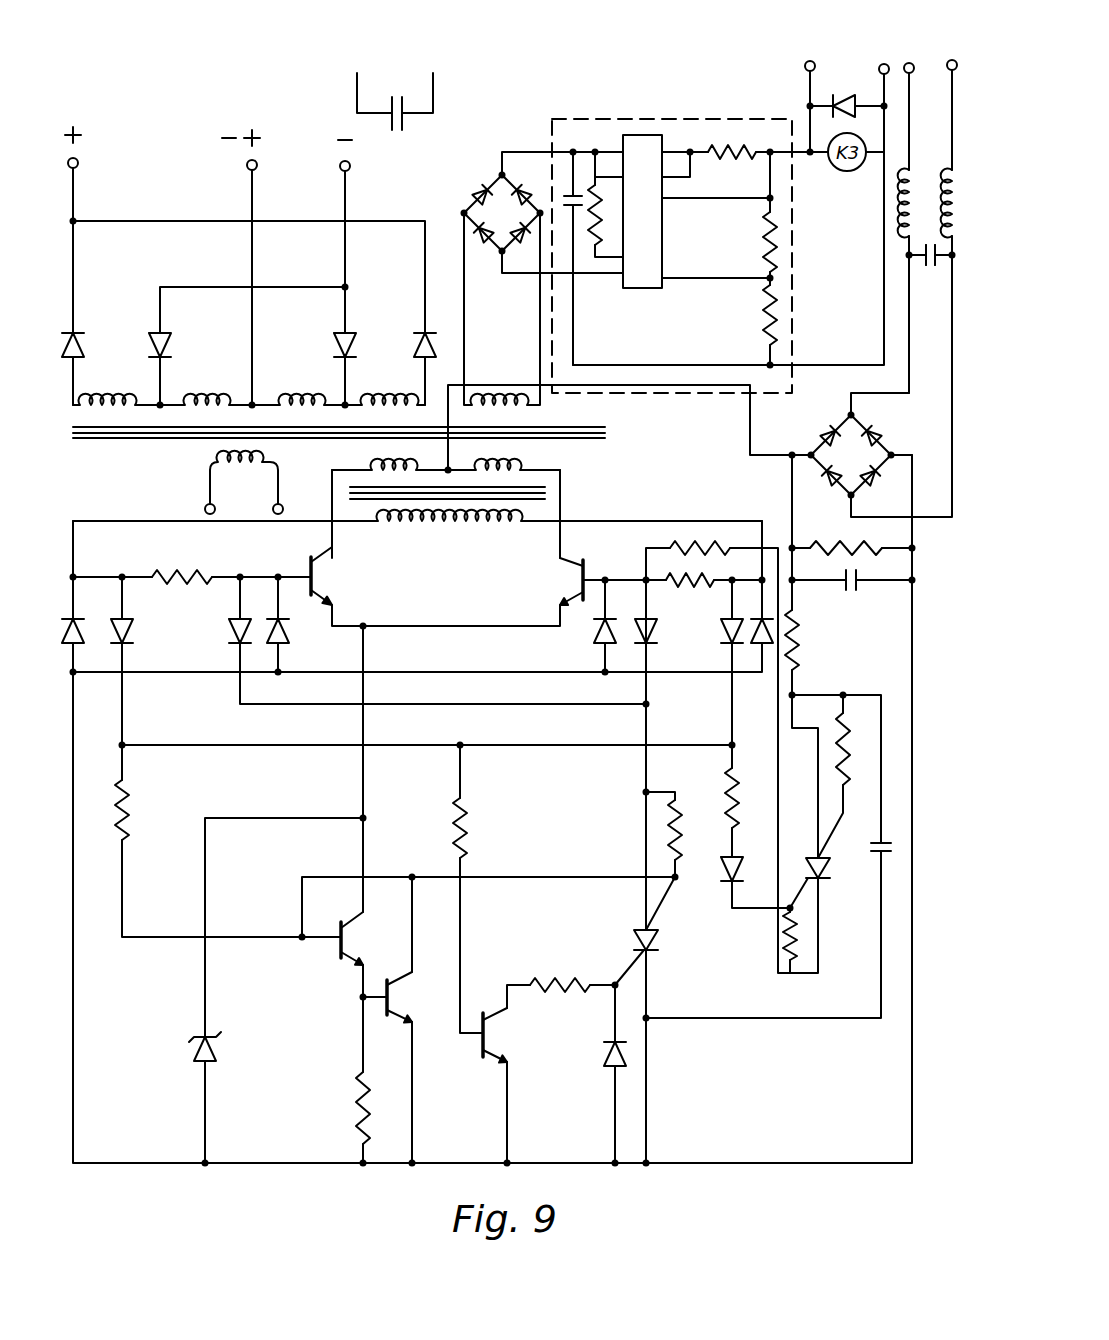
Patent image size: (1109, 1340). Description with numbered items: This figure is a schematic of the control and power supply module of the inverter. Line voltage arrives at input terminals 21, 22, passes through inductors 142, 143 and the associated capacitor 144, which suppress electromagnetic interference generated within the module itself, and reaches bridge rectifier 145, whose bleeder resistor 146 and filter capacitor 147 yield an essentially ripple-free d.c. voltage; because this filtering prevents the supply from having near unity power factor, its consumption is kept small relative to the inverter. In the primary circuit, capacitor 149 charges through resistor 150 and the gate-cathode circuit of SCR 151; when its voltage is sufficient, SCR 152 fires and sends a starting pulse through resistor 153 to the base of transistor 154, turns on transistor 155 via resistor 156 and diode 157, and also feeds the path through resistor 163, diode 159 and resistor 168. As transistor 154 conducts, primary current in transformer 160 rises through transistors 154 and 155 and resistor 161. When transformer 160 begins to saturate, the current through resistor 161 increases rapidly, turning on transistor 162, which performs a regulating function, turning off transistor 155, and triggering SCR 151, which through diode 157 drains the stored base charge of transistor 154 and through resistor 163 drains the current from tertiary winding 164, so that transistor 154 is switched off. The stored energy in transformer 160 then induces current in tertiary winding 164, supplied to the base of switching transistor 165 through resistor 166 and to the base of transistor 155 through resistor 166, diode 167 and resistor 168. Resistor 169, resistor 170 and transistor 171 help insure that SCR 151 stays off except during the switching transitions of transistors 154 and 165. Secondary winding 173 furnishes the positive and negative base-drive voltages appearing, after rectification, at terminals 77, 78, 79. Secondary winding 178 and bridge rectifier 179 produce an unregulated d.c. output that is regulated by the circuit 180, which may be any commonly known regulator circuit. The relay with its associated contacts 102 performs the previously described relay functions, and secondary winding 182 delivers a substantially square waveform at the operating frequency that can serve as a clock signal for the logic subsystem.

The input terminal 21 is at (909, 62).
The input terminal 22 is at (952, 60).
The terminal 77 is at (80, 160).
The terminal 78 is at (247, 167).
The terminal 79 is at (340, 163).
The contacts 102 is at (405, 118).
The inductor 142 is at (896, 190).
The inductor 143 is at (947, 176).
The capacitor 144 is at (931, 268).
The bridge rectifier 145 is at (866, 471).
The bleeder resistor 146 is at (845, 545).
The filter capacitor 147 is at (858, 588).
The capacitor 149 is at (879, 840).
The resistor 150 is at (795, 648).
The SCR 151 is at (657, 950).
The SCR 152 is at (830, 878).
The resistor 153 is at (690, 548).
The transistor 154 is at (580, 568).
The transistor 155 is at (345, 936).
The resistor 156 is at (678, 830).
The diode 157 is at (648, 638).
The diode 159 is at (738, 640).
The transformer 160 is at (562, 462).
The resistor 161 is at (362, 1105).
The transistor 162 is at (390, 1003).
The resistor 163 is at (690, 582).
The tertiary winding 164 is at (470, 528).
The switching transistor 165 is at (315, 580).
The resistor 166 is at (185, 575).
The diode 167 is at (128, 625).
The resistor 168 is at (128, 815).
The resistor 169 is at (465, 822).
The resistor 170 is at (560, 982).
The transistor 171 is at (490, 1035).
The secondary winding 173 is at (185, 402).
The secondary winding 178 is at (540, 408).
The bridge rectifier 179 is at (516, 230).
The regulator circuit 180 is at (640, 395).
The secondary winding 182 is at (212, 465).